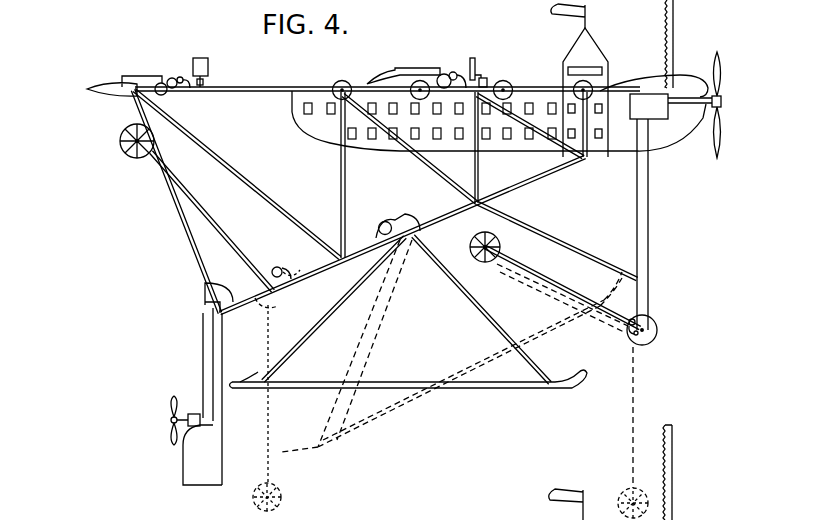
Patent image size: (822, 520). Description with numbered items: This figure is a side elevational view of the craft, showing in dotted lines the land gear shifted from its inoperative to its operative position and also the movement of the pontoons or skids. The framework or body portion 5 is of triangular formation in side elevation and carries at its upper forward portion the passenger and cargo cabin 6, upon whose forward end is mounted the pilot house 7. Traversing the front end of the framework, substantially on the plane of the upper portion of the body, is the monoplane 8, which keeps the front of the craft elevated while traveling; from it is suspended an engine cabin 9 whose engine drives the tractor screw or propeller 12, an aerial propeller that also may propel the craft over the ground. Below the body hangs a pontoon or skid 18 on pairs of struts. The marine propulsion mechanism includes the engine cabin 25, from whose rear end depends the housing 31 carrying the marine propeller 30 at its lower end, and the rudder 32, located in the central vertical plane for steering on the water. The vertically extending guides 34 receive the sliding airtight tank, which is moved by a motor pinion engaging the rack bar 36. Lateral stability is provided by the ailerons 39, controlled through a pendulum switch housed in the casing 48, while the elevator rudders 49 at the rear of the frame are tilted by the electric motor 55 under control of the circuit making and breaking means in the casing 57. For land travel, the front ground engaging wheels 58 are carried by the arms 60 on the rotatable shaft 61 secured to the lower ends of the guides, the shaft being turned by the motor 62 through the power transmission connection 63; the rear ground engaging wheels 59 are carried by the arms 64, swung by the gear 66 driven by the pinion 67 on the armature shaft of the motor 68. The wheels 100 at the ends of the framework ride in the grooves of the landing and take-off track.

The framework or body portion 5 is at (249, 82).
The passenger and cargo cabin 6 is at (322, 129).
The pilot house 7 is at (579, 80).
The monoplane 8 is at (682, 75).
The engine cabin 9 is at (658, 117).
The tractor screw or propeller 12 is at (724, 79).
The pontoon or skid 18 is at (479, 402).
The engine cabin 25 is at (205, 293).
The marine propeller 30 is at (167, 410).
The depending housing 31 is at (203, 351).
The rudder 32 is at (192, 464).
The vertically extending guides 34 is at (650, 269).
The rack bar 36 is at (675, 28).
The ailerons 39 is at (380, 82).
The casing 48 is at (478, 63).
The elevator rudders 49 is at (100, 88).
The electric motor 55 is at (173, 78).
The casing 57 is at (209, 62).
The front ground engaging wheels 58 is at (470, 245).
The rear ground engaging wheels 59 is at (120, 151).
The arms 60 is at (558, 293).
The rotatable shaft 61 is at (630, 337).
The motor 62 is at (658, 332).
The power transmission connection 63 is at (626, 327).
The arms 64 is at (215, 226).
The gear 66 is at (254, 319).
The pinion 67 is at (300, 262).
The motor 68 is at (278, 267).
The wheels 100 is at (337, 86).